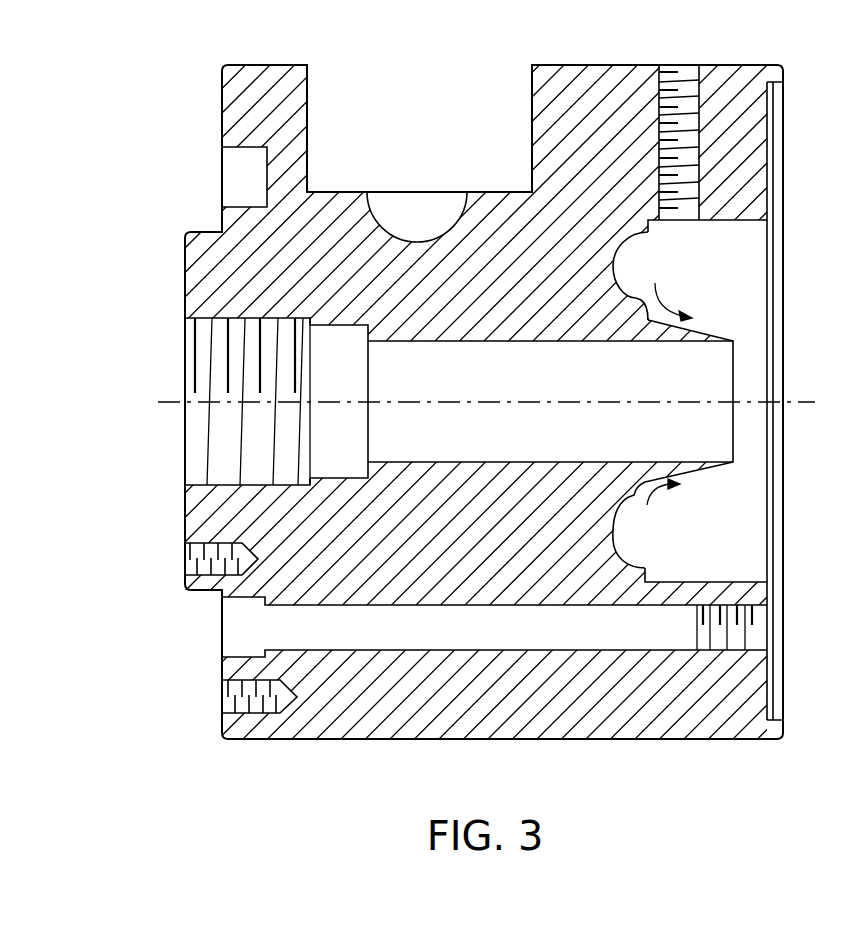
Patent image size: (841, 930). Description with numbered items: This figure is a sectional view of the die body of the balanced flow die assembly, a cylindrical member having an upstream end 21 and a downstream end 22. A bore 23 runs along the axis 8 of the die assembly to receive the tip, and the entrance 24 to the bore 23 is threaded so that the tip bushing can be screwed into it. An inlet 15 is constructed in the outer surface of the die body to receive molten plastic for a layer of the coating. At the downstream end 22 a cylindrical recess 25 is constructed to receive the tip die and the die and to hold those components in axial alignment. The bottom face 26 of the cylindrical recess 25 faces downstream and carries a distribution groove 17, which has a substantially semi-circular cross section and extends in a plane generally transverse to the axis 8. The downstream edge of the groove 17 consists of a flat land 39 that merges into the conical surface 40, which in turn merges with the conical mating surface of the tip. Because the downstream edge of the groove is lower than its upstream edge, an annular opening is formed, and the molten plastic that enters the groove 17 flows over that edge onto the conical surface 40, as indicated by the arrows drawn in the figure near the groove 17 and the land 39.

The axis 8 is at (545, 400).
The inlet 15 is at (415, 197).
The distribution groove 17 is at (638, 251).
The upstream end 21 is at (185, 272).
The downstream end 22 is at (782, 122).
The bore 23 is at (445, 447).
The entrance 24 is at (195, 432).
The cylindrical recess 25 is at (706, 297).
The bottom face 26 is at (653, 570).
The flat land 39 is at (646, 502).
The conical surface 40 is at (693, 473).